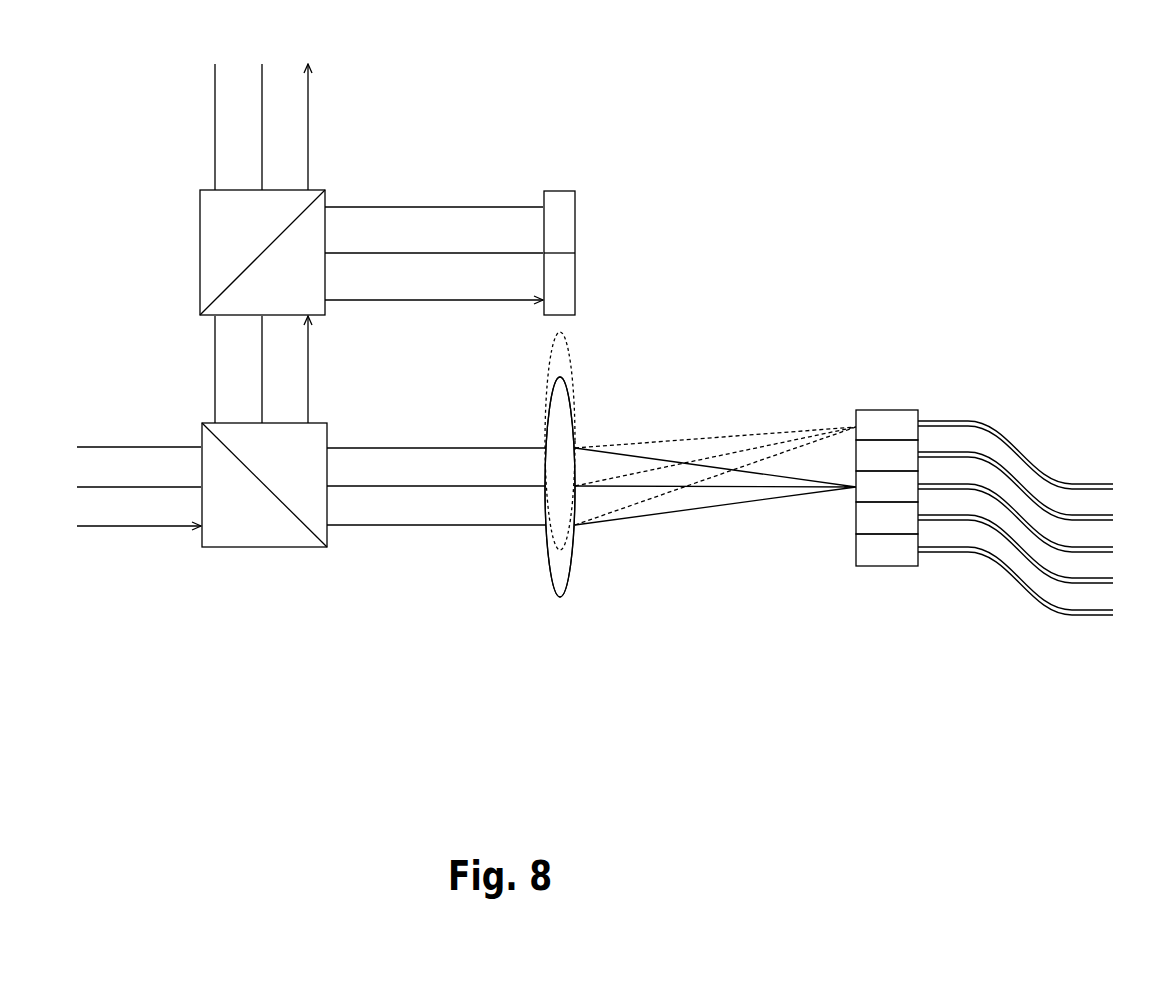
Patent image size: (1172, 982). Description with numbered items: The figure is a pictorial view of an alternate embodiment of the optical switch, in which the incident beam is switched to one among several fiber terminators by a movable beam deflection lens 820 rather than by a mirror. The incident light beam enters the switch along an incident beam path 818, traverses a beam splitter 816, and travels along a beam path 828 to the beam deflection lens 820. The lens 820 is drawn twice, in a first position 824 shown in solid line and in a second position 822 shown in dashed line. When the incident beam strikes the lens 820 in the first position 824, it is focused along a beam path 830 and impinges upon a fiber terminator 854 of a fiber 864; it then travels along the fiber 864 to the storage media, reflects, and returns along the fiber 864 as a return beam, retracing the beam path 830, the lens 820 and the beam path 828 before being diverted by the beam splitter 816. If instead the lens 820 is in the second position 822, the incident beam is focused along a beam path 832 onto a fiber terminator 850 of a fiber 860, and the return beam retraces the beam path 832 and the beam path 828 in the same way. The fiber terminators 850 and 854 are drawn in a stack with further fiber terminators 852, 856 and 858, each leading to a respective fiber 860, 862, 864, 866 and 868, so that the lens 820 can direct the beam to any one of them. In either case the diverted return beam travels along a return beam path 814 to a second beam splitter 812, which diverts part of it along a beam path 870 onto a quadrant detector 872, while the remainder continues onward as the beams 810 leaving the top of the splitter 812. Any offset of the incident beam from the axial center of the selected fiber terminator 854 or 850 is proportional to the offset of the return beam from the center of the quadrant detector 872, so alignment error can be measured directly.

The output beams 810 is at (215, 90).
The beam splitter 812 is at (200, 247).
The return beam path 814 is at (215, 358).
The beam splitter 816 is at (272, 550).
The incident beam path 818 is at (124, 528).
The beam deflection lens 820 is at (548, 400).
The second position 822 is at (553, 340).
The first position 824 is at (549, 575).
The beam path 828 is at (390, 527).
The beam path 830 is at (755, 506).
The beam path 832 is at (755, 432).
The fiber terminator 850 is at (887, 425).
The fiber port 852 is at (887, 455).
The fiber terminator 854 is at (887, 486).
The fiber port 856 is at (887, 518).
The fiber port 858 is at (887, 550).
The fiber 860 is at (1045, 463).
The optical fiber 862 is at (1050, 503).
The fiber 864 is at (1045, 533).
The optical fiber 866 is at (1050, 565).
The optical fiber 868 is at (1050, 597).
The beam path 870 is at (403, 207).
The quadrant detector 872 is at (575, 237).